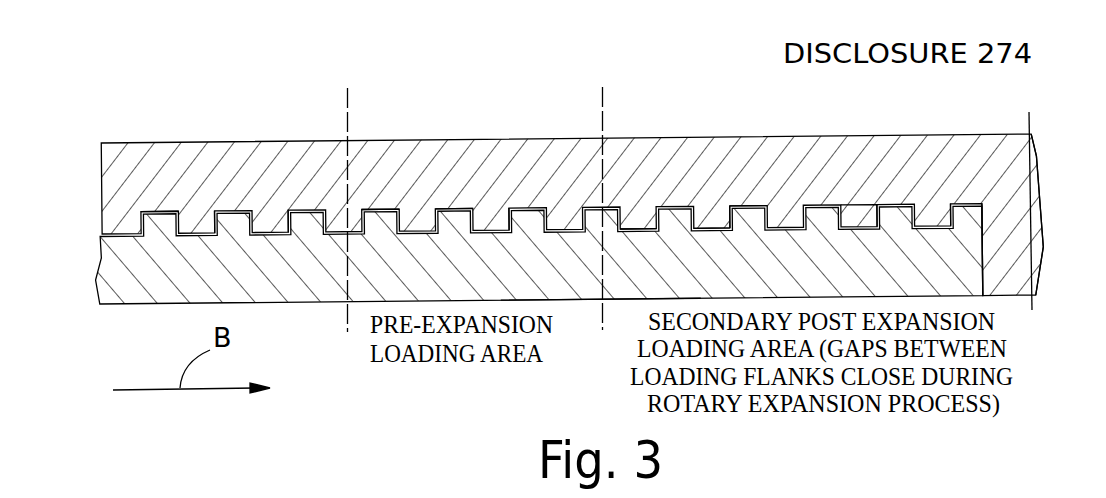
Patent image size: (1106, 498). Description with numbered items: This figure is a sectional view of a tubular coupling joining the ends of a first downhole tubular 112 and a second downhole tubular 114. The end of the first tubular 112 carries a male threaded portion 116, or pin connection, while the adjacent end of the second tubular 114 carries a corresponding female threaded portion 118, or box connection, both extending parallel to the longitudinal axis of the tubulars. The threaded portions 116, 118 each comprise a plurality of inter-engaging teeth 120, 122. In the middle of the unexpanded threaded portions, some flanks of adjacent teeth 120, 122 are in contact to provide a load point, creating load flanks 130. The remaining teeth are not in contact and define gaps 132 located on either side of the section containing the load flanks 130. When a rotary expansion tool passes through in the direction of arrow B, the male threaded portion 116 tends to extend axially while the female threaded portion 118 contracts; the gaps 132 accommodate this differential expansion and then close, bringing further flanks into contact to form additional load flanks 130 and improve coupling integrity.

The first downhole tubular 112 is at (148, 286).
The second downhole tubular 114 is at (1003, 227).
The male threaded portion 116 is at (592, 298).
The female threaded portion 118 is at (545, 157).
The teeth 120 is at (748, 208).
The teeth 122 is at (722, 210).
The load flanks 130 is at (507, 210).
The gaps 132 is at (291, 222).